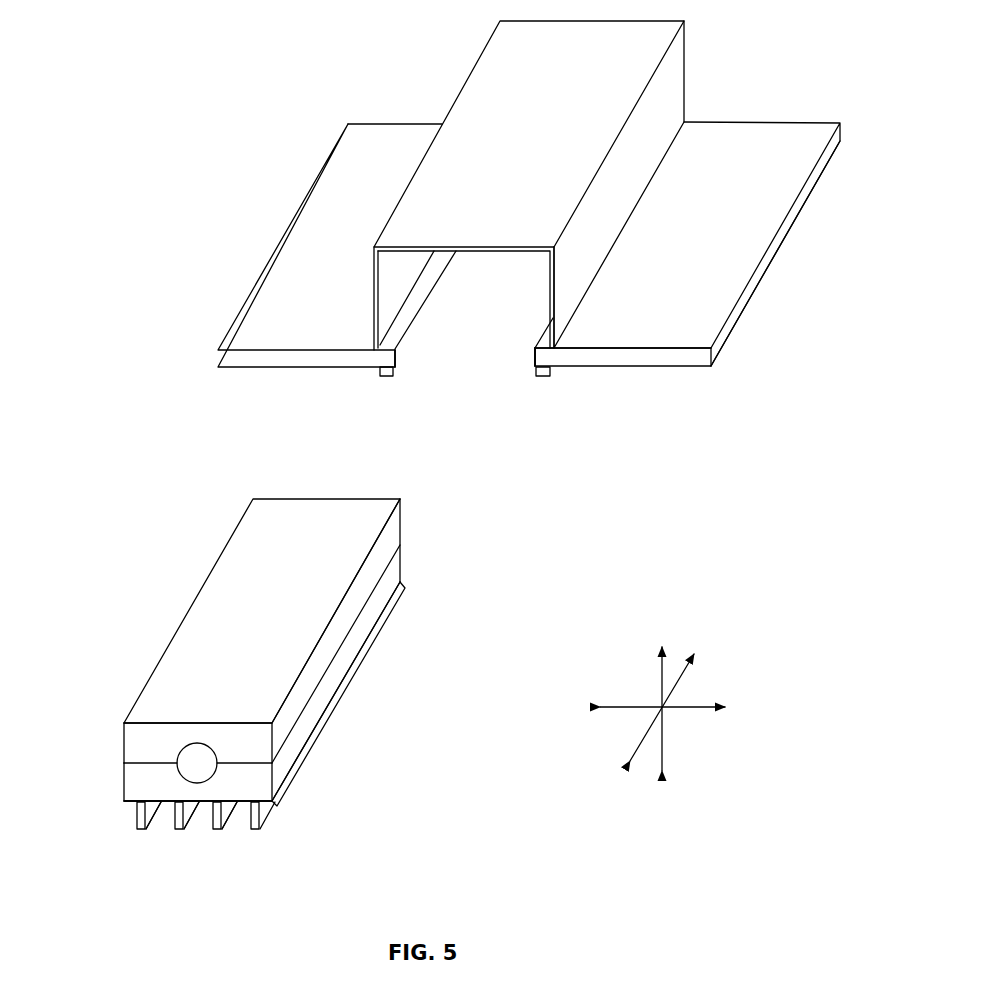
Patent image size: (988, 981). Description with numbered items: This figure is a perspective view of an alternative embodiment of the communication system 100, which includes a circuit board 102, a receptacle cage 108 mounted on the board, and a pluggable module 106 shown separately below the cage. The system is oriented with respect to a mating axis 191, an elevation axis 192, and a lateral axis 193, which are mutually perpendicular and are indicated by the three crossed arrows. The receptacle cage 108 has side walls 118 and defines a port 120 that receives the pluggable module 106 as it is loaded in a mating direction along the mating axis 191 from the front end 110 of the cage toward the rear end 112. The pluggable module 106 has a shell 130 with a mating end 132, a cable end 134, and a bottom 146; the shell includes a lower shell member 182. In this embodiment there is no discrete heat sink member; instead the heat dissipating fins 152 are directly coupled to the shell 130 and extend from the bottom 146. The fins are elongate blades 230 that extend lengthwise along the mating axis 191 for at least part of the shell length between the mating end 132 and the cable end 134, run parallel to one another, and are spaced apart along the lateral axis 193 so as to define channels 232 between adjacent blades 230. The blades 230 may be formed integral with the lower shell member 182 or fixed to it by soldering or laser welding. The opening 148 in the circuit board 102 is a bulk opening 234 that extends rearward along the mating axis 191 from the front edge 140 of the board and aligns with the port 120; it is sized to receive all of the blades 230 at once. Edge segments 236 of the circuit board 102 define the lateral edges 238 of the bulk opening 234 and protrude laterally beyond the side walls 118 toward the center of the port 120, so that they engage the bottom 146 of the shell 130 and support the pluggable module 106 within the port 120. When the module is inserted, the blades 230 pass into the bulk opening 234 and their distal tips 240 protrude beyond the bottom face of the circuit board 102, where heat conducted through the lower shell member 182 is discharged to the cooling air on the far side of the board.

The communication system 100 is at (168, 76).
The circuit board 102 is at (738, 308).
The pluggable module 106 is at (143, 601).
The receptacle cage 108 is at (402, 230).
The front end 110 is at (373, 312).
The rear end 112 is at (684, 68).
The side walls 118 is at (663, 110).
The port 120 is at (389, 287).
The shell 130 is at (140, 742).
The mating end 132 is at (402, 523).
The cable end 134 is at (134, 778).
The front edge 140 is at (607, 358).
The bottom 146 is at (125, 807).
The opening 148 is at (531, 380).
The heat dissipating fins 152 is at (137, 817).
The lower shell member 182 is at (317, 707).
The mating axis 191 is at (640, 737).
The elevation axis 192 is at (660, 683).
The lateral axis 193 is at (628, 704).
The blades 230 is at (133, 828).
The channels 232 is at (194, 832).
The bulk opening 234 is at (478, 376).
The edge segments 236 is at (387, 376).
The lateral edges 238 is at (402, 350).
The distal tips 240 is at (735, 430).